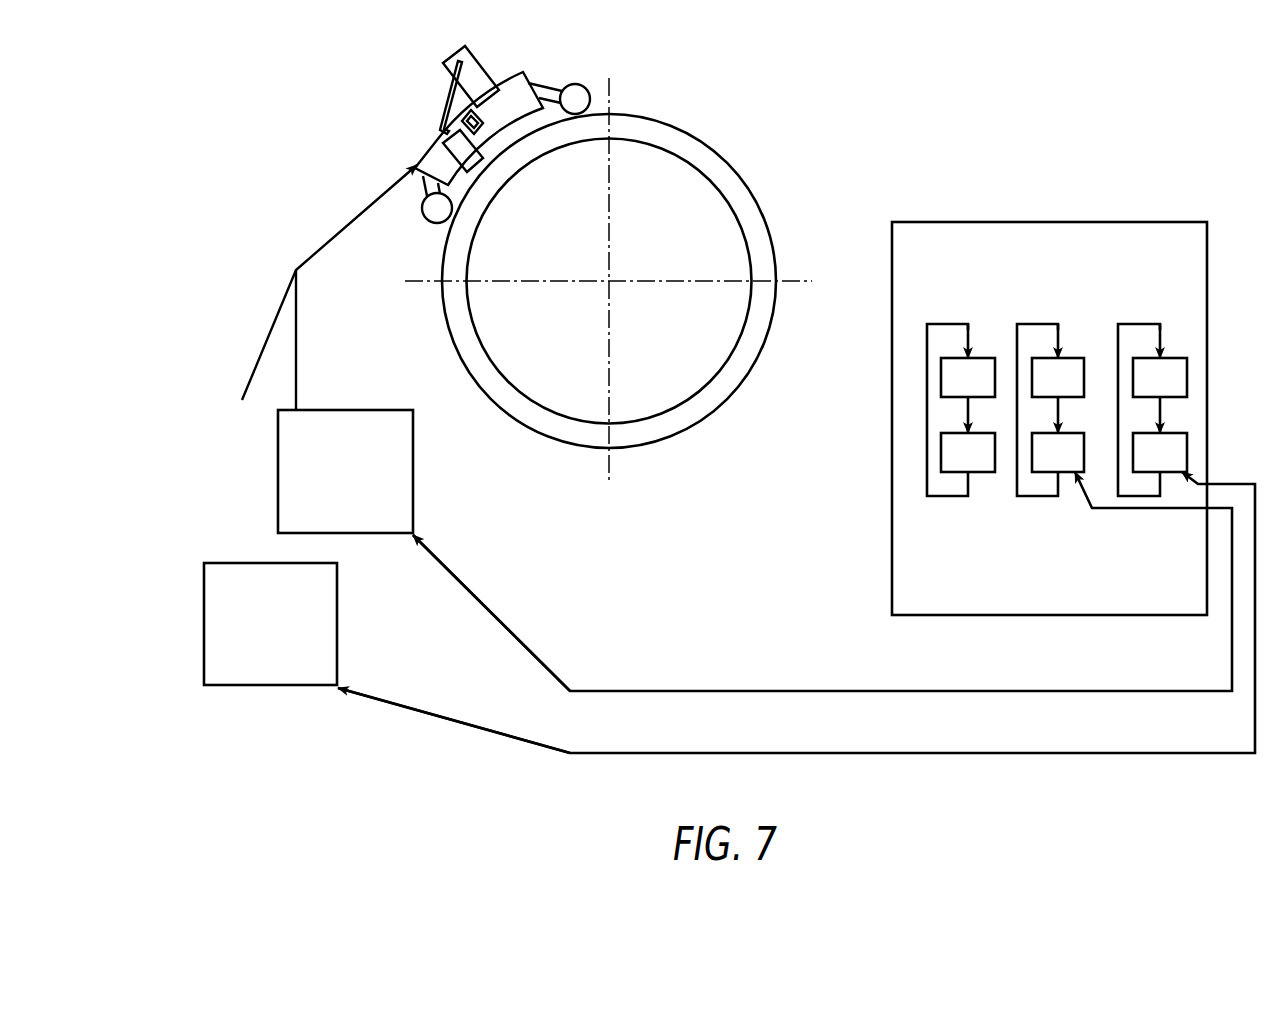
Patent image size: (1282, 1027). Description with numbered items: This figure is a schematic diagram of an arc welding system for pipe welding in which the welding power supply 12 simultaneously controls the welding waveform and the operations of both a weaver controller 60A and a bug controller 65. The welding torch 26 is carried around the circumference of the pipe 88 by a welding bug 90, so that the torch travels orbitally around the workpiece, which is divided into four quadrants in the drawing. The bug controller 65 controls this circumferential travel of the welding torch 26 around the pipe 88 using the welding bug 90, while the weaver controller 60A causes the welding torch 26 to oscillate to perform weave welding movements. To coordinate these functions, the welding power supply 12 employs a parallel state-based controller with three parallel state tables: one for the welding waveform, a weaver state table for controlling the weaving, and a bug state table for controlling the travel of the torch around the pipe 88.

The welding power supply 12 is at (1085, 221).
The welding torch 26 is at (438, 150).
The weaver controller 60A is at (235, 685).
The bug controller 65 is at (362, 533).
The pipe 88 is at (733, 395).
The welding bug 90 is at (527, 72).